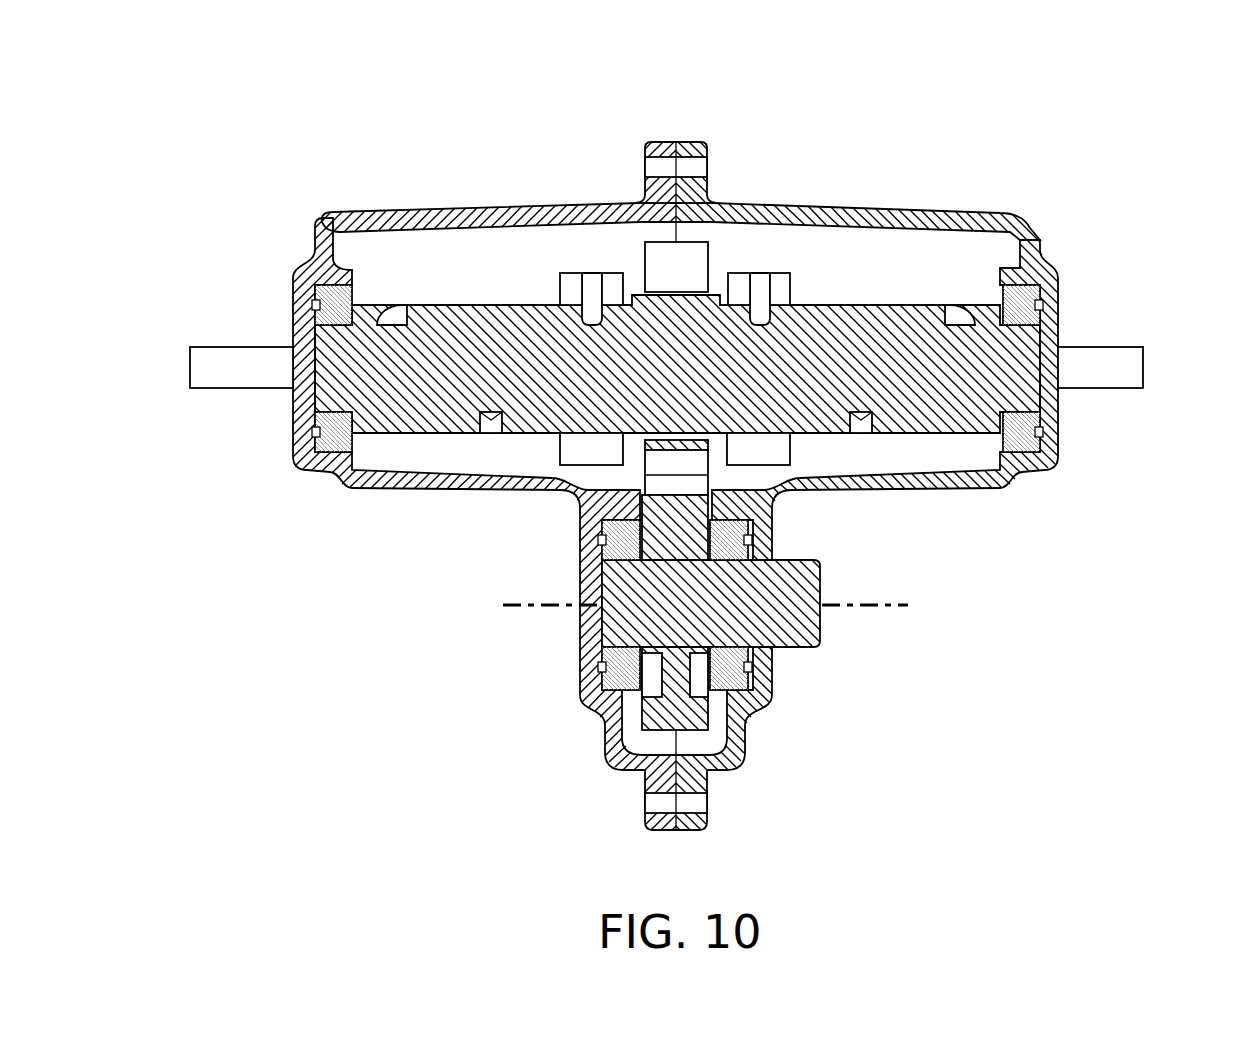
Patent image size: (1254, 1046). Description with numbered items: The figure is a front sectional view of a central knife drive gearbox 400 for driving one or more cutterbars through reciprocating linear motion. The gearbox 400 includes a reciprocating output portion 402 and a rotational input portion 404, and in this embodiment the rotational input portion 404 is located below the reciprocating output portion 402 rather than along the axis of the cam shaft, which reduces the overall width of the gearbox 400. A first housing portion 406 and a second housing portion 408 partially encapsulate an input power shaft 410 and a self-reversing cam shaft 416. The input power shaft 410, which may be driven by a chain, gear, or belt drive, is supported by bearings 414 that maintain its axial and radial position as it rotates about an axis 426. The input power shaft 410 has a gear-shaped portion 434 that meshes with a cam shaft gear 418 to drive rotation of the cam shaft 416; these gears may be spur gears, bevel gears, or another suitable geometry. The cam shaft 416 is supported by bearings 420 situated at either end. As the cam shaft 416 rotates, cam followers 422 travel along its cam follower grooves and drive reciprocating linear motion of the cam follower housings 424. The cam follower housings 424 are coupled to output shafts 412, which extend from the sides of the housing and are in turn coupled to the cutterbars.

The central knife drive gearbox 400 is at (145, 124).
The reciprocating output portion 402 is at (330, 545).
The rotational input portion 404 is at (517, 873).
The first housing portion 406 is at (466, 210).
The second housing portion 408 is at (937, 212).
The input power shaft 410 is at (805, 650).
The output shafts 412 is at (229, 347).
The bearings 414 is at (620, 690).
The self-reversing cam shaft 416 is at (922, 433).
The cam shaft gear 418 is at (708, 257).
The bearings 420 is at (320, 455).
The cam followers 422 is at (591, 275).
The cam follower housings 424 is at (558, 283).
The axis 426 is at (867, 606).
The gear-shaped portion 434 is at (662, 518).